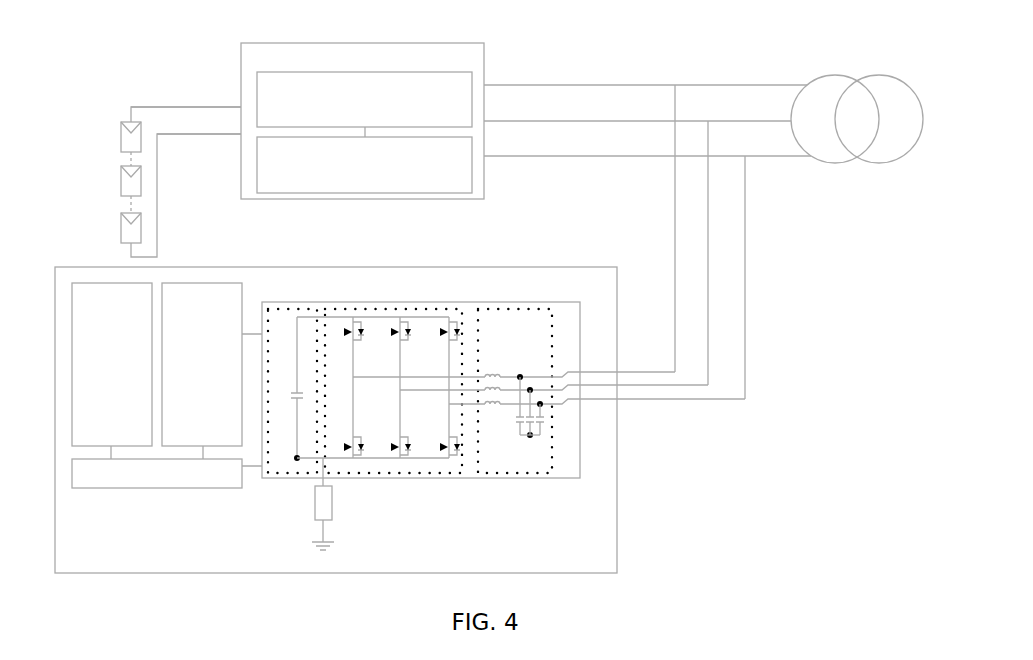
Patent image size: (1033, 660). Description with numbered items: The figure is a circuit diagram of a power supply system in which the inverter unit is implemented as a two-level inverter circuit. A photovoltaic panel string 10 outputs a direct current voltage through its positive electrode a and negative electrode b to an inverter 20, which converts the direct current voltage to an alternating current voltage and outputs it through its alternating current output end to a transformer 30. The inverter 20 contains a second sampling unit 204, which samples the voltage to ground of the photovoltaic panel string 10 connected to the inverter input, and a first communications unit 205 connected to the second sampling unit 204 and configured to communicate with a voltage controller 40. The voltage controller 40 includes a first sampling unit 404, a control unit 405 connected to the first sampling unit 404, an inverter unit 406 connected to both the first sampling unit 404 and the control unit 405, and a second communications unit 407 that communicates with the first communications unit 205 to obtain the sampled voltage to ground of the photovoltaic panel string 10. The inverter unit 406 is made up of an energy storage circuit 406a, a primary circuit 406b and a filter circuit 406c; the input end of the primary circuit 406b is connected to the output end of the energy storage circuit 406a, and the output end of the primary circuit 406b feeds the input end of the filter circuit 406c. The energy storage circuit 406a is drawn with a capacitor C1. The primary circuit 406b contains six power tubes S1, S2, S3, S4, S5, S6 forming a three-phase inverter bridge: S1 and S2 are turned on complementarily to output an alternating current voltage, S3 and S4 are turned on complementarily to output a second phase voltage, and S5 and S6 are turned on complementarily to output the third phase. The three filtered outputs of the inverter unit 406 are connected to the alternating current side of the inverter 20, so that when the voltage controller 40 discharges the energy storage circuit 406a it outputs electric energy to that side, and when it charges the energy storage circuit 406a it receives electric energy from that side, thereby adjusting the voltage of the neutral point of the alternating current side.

The photovoltaic panel string 10 is at (108, 138).
The inverter 20 is at (362, 121).
The second sampling unit 204 is at (364, 99).
The first communications unit 205 is at (364, 165).
The transformer 30 is at (835, 178).
The voltage controller 40 is at (619, 454).
The first sampling unit 404 is at (202, 364).
The control unit 405 is at (157, 473).
The inverter unit 406 is at (406, 300).
The energy storage circuit 406a is at (239, 436).
The primary circuit 406b is at (398, 429).
The filter circuit 406c is at (513, 473).
The second communications unit 407 is at (112, 364).
The positive electrode a is at (203, 104).
The negative electrode b is at (194, 137).
The capacitor C1 is at (287, 387).
The power tube S1 is at (346, 339).
The power tube S2 is at (346, 437).
The power tube S3 is at (392, 339).
The power tube S4 is at (392, 437).
The power tube S5 is at (441, 339).
The power tube S6 is at (441, 438).